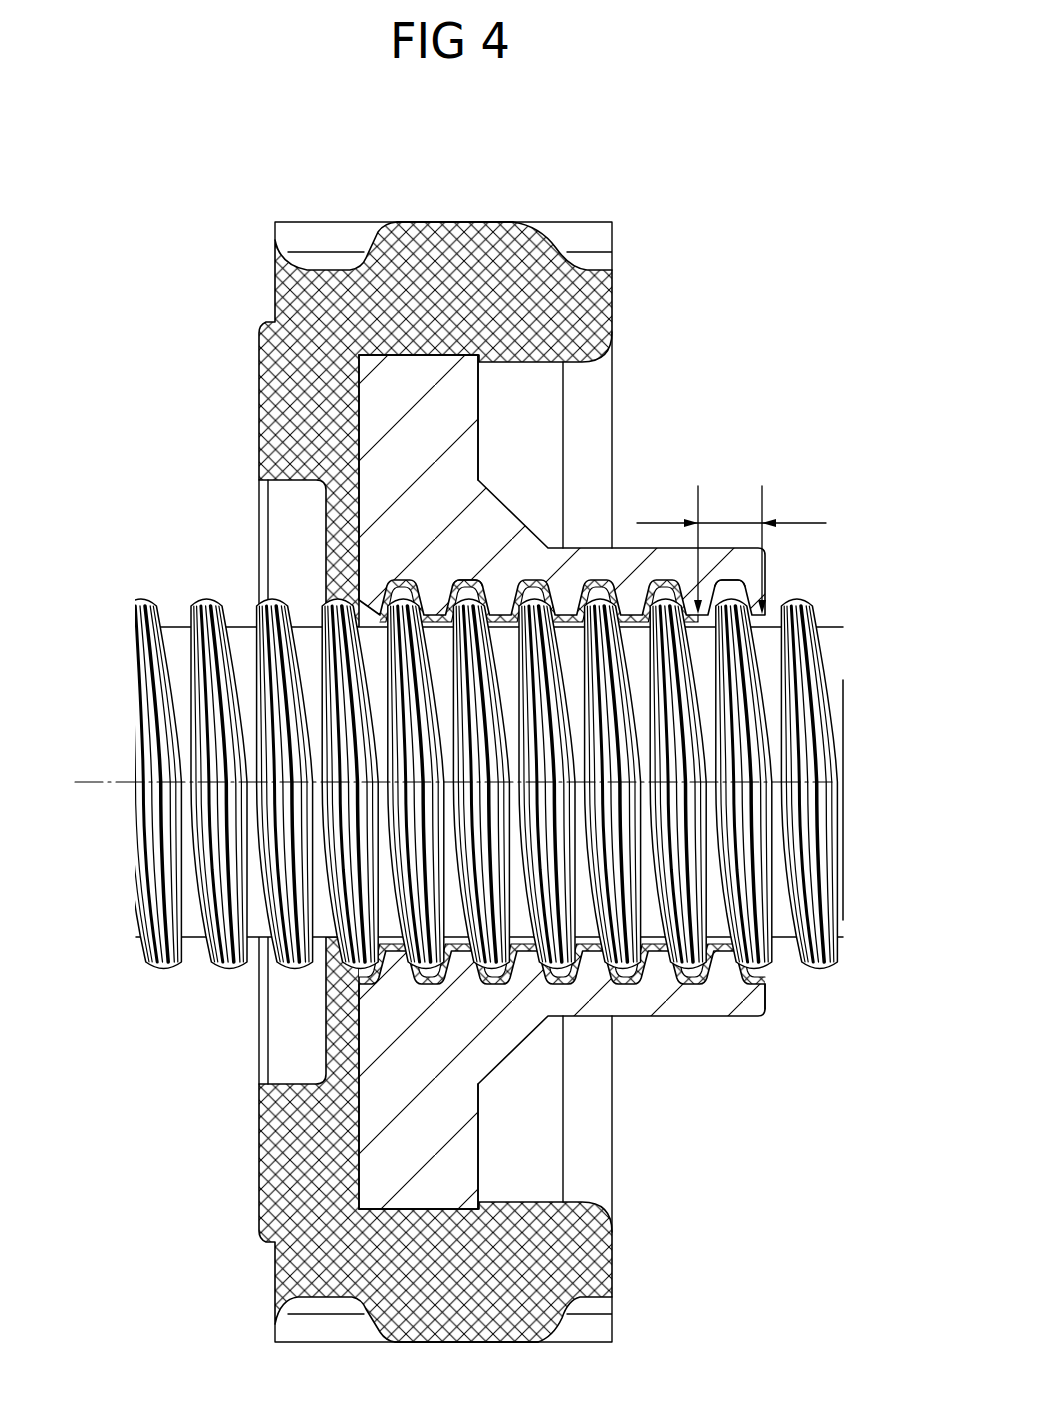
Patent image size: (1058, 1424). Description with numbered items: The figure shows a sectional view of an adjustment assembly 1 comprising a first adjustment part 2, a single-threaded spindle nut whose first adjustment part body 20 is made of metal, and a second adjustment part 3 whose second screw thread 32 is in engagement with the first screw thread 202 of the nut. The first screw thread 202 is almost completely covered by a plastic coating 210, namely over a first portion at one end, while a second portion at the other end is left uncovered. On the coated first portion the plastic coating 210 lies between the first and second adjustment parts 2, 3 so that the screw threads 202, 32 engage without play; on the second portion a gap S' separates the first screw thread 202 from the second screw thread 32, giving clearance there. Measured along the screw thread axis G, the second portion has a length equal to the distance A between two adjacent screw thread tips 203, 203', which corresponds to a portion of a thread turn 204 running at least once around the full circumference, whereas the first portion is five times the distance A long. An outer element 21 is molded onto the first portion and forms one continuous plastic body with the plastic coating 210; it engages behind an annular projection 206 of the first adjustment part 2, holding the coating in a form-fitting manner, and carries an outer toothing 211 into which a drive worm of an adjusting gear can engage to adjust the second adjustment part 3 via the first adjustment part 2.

The adjustment assembly 1 is at (684, 199).
The first adjustment part 2 is at (710, 349).
The second adjustment part 3 is at (544, 784).
The first adjustment part body 20 is at (615, 560).
The outer element 21 is at (290, 410).
The second screw thread 32 is at (768, 710).
The first screw thread 202 is at (566, 585).
The screw thread tip 203 is at (703, 535).
The screw thread tip 203' is at (775, 535).
The thread turn 204 is at (751, 1000).
The annular projection 206 is at (445, 405).
The plastic coating 210 is at (471, 596).
The outer toothing 211 is at (466, 250).
The distance between two adjacent screw thread tips A is at (731, 513).
The gap S' is at (778, 564).
The screw thread axis G is at (436, 784).